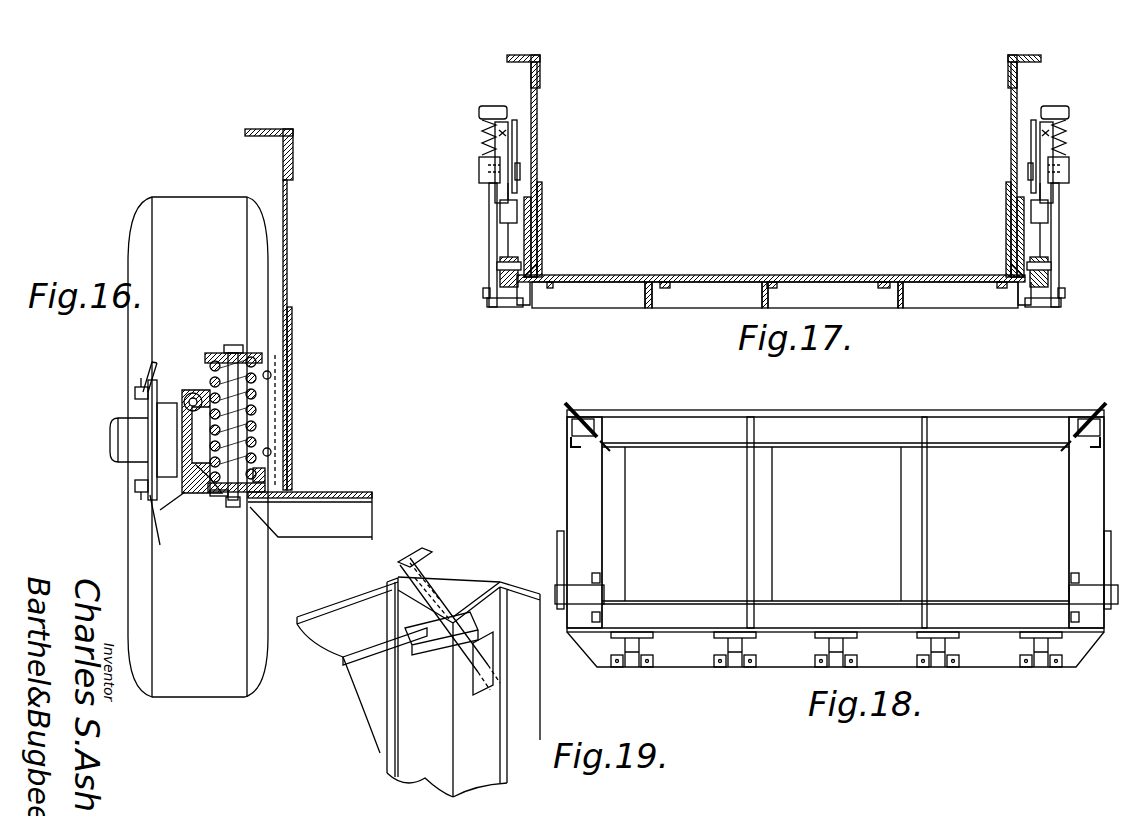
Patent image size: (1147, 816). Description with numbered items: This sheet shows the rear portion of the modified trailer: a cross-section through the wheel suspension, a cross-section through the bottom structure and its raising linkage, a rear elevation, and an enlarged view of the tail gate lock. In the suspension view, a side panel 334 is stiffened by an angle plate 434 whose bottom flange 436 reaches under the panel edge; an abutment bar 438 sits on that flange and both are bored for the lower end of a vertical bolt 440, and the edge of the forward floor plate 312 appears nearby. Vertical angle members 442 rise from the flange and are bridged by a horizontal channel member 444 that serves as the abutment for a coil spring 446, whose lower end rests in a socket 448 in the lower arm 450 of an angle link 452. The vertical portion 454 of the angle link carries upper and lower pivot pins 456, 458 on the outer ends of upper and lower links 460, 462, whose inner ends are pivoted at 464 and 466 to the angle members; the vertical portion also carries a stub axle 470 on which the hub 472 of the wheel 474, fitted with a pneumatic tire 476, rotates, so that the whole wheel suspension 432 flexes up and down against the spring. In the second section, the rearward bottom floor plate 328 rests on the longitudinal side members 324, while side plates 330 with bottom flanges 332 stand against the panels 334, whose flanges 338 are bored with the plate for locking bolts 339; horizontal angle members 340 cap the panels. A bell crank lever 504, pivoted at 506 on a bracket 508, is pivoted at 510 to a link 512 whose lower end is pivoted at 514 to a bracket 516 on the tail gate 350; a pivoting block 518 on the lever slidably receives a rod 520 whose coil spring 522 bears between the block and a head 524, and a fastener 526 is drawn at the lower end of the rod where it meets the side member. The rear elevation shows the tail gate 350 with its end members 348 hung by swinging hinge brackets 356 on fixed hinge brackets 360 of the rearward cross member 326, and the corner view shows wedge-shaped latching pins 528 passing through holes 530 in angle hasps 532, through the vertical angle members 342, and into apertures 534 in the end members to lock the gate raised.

In FIG. 16, the forward floor plate 312 is at (366, 492).
In FIG. 17, the longitudinal side members 324 is at (562, 308).
In FIG. 18, the rearward cross member 326 is at (774, 668).
In FIG. 17, the rearward bottom floor plate 328 is at (688, 275).
In FIG. 17, the side plates 330 is at (543, 194).
In FIG. 17, the bottom flanges 332 is at (540, 272).
In FIG. 16, the side panels 334 is at (289, 235).
In FIG. 17, the side panels 334 is at (538, 131).
In FIG. 19, the side panels 334 is at (348, 728).
In FIG. 17, the bottom edge flanges 338 is at (500, 265).
In FIG. 17, the locking bolts 339 is at (508, 262).
In FIG. 16, the horizontal angle members 340 is at (265, 128).
In FIG. 17, the horizontal angle members 340 is at (524, 54).
In FIG. 19, the horizontal angle members 340 is at (345, 612).
In FIG. 19, the vertical angle members 342 is at (386, 768).
In FIG. 18, the end members 348 is at (575, 493).
In FIG. 19, the end members 348 is at (498, 730).
In FIG. 18, the tail gate 350 is at (817, 404).
In FIG. 19, the tail gate 350 is at (498, 576).
In FIG. 18, the swinging hinge brackets 356 is at (722, 641).
In FIG. 18, the fixed hinge brackets 360 is at (724, 667).
In FIG. 16, the wheel suspensions 432 is at (198, 358).
In FIG. 16, the angle plates 434 is at (293, 333).
In FIG. 16, the bottom flanges 436 is at (222, 497).
In FIG. 16, the abutment bar 438 is at (208, 490).
In FIG. 16, the vertical bolt 440 is at (233, 507).
In FIG. 16, the vertical angle members 442 is at (262, 350).
In FIG. 16, the horizontal channel member 444 is at (222, 345).
In FIG. 16, the coil spring 446 is at (262, 411).
In FIG. 16, the socket 448 is at (267, 474).
In FIG. 16, the lower arm 450 is at (267, 487).
In FIG. 16, the angle link 452 is at (152, 500).
In FIG. 16, the vertical portion 454 is at (167, 461).
In FIG. 16, the upper pivot pin 456 is at (191, 395).
In FIG. 16, the lower pivot pin 458 is at (140, 494).
In FIG. 16, the upper links 460 is at (184, 392).
In FIG. 16, the lower links 462 is at (186, 491).
In FIG. 16, the pivot 464 is at (271, 375).
In FIG. 16, the pivot 466 is at (271, 452).
In FIG. 16, the stub axle 470 is at (115, 438).
In FIG. 16, the hub 472 is at (152, 480).
In FIG. 16, the wheel 474 is at (150, 380).
In FIG. 16, the pneumatic tire 476 is at (190, 197).
In FIG. 17, the bell crank lever 504 is at (509, 153).
In FIG. 17, the pivot 506 is at (500, 213).
In FIG. 17, the bracket 508 is at (521, 170).
In FIG. 17, the pivot 510 is at (482, 135).
In FIG. 17, the link 512 is at (516, 140).
In FIG. 18, the link 512 is at (556, 540).
In FIG. 18, the pivot 514 is at (555, 590).
In FIG. 18, the bracket 516 is at (578, 590).
In FIG. 17, the pivoting block 518 is at (480, 172).
In FIG. 17, the rod 520 is at (489, 236).
In FIG. 18, the rod 520 is at (1086, 412).
In FIG. 17, the coil spring 522 is at (498, 143).
In FIG. 17, the head 524 is at (492, 106).
In FIG. 17, the bolt 526 is at (483, 295).
In FIG. 18, the latching pins 528 is at (570, 403).
In FIG. 19, the latching pins 528 is at (418, 556).
In FIG. 19, the holes 530 is at (437, 657).
In FIG. 18, the angle hasps 532 is at (569, 442).
In FIG. 19, the angle hasps 532 is at (365, 668).
In FIG. 19, the apertures 534 is at (483, 690).